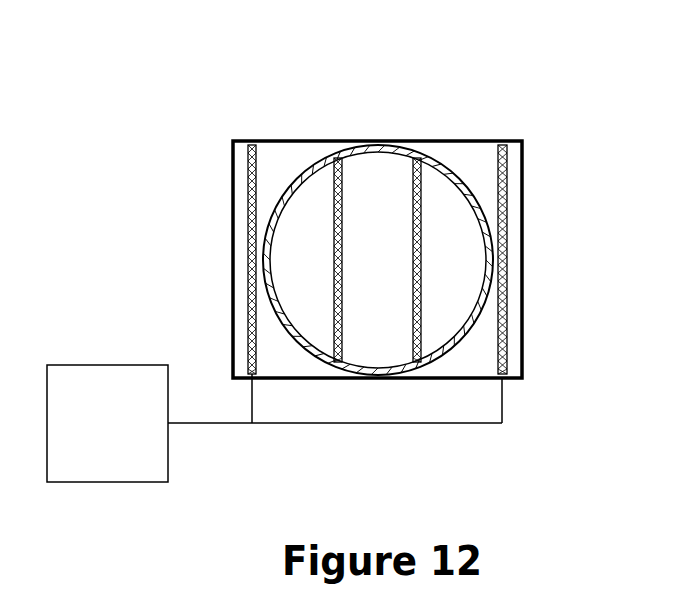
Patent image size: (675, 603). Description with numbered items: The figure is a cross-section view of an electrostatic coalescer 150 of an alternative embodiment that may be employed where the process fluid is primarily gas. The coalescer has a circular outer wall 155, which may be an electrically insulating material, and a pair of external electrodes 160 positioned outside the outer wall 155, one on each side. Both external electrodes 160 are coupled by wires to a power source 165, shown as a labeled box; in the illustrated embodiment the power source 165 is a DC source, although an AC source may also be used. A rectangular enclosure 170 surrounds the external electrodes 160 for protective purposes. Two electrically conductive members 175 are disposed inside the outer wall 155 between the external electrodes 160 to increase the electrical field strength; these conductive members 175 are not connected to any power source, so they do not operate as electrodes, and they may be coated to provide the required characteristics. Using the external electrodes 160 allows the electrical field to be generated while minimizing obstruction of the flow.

The electrostatic coalescer 150 is at (132, 98).
The outer wall 155 is at (378, 143).
The external electrodes 160 is at (248, 201).
The power source 165 is at (86, 467).
The enclosure 170 is at (525, 293).
The electrically conductive members 175 is at (334, 176).